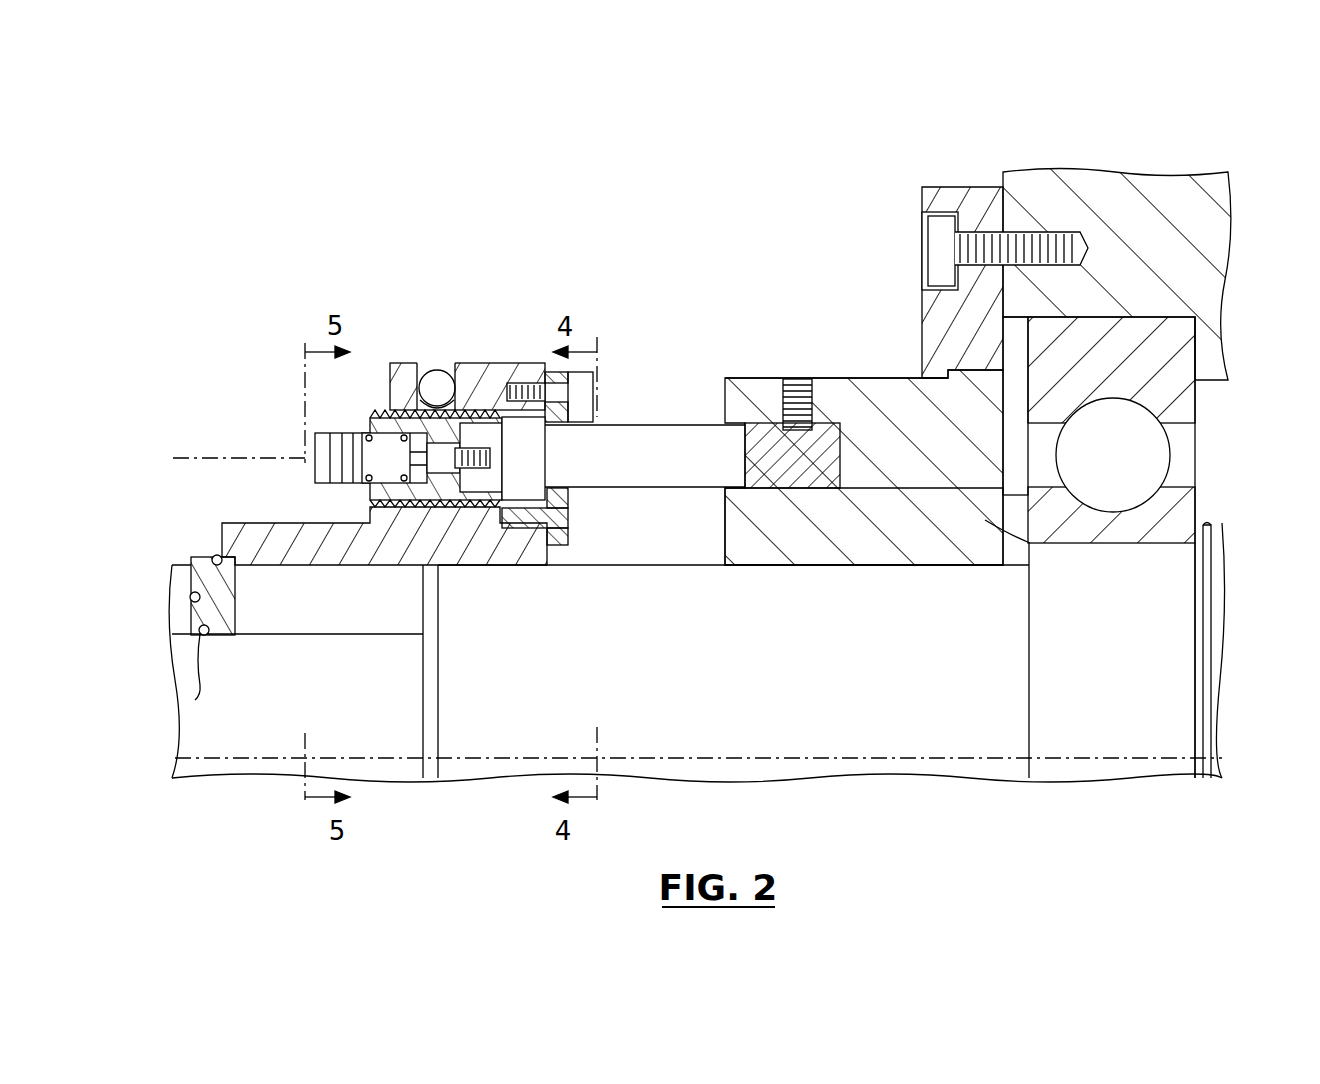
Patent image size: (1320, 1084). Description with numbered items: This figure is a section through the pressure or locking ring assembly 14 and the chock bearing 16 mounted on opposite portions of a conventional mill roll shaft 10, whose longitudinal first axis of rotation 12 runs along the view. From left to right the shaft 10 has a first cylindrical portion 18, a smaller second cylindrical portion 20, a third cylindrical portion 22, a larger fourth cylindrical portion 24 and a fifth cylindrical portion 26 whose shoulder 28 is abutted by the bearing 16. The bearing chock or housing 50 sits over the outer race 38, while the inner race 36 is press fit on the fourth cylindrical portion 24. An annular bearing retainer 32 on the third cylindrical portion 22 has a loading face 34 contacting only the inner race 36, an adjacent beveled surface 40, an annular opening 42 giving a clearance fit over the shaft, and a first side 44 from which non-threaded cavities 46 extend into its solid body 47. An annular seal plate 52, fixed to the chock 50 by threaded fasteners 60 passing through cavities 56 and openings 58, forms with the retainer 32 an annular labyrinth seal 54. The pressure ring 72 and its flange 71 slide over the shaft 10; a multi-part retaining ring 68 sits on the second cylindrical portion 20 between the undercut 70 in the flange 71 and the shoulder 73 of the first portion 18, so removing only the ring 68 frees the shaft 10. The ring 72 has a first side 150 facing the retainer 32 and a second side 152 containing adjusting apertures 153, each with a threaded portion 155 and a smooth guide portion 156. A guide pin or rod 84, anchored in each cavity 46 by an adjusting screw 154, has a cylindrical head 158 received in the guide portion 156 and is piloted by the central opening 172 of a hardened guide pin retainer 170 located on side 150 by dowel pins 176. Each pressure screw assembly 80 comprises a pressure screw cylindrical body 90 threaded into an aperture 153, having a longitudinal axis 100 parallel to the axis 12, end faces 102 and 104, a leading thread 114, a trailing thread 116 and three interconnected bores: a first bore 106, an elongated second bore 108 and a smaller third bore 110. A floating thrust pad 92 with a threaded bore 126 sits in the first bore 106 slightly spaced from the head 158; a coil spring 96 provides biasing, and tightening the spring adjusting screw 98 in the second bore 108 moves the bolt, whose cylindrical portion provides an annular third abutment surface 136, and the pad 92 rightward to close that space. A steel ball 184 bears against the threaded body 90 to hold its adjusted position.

The mill roll shaft 10 is at (985, 737).
The first axis of rotation 12 is at (1142, 752).
The pressure or locking ring assembly 14 is at (368, 258).
The chock bearing 16 is at (1212, 458).
The first cylindrical portion 18 is at (185, 565).
The second cylindrical portion 20 is at (292, 710).
The third cylindrical portion 22 is at (495, 725).
The fourth cylindrical portion 24 is at (1192, 722).
The fifth cylindrical portion 26 is at (1210, 600).
The shoulder 28 is at (1213, 652).
The bearing retainer 32 is at (830, 358).
The loading face 34 is at (1030, 522).
The inner race 36 is at (1214, 543).
The outer race 38 is at (1190, 402).
The beveled or inclined surface 40 is at (1010, 553).
The annular opening 42 is at (740, 567).
The first side 44 is at (728, 400).
The cavities 46 is at (735, 427).
The solid body 47 is at (858, 548).
The bearing chock or housing 50 is at (1210, 244).
The annular seal plate 52 is at (928, 316).
The annular labyrinth seal 54 is at (925, 380).
The cavities 56 is at (918, 215).
The openings 58 is at (972, 238).
The threaded fasteners 60 is at (940, 248).
The retaining ring 68 is at (205, 555).
The circumferential notch or undercut 70 is at (215, 548).
The flange 71 is at (293, 566).
The pressure ring 72 is at (492, 352).
The shoulder 73 is at (197, 597).
The pressure screw assembly 80 is at (325, 418).
The guide pin or rod 84 is at (643, 425).
The pressure screw cylindrical body 90 is at (392, 500).
The floating thrust pad 92 is at (487, 470).
The coil spring 96 is at (365, 470).
The spring adjusting screw 98 is at (335, 458).
The longitudinally extending axis 100 is at (205, 460).
The end face 102 is at (325, 433).
The end face 104 is at (470, 500).
The first bore 106 is at (487, 490).
The second bore 108 is at (400, 502).
The third annular bore 110 is at (420, 505).
The leading thread 114 is at (540, 530).
The trailing thread 116 is at (395, 413).
The threaded bore 126 is at (468, 378).
The third abutment surface 136 is at (488, 456).
The first side 150 is at (538, 400).
The second side 152 is at (375, 365).
The adjusting apertures 153 is at (440, 540).
The adjusting screw 154 is at (790, 400).
The threaded portion 155 is at (520, 515).
The smooth guide portion 156 is at (522, 415).
The cylindrical head 158 is at (538, 437).
The guide pin retainer 170 is at (572, 540).
The central opening 172 is at (560, 484).
The dowel pins 176 is at (583, 387).
The steel ball 184 is at (445, 430).